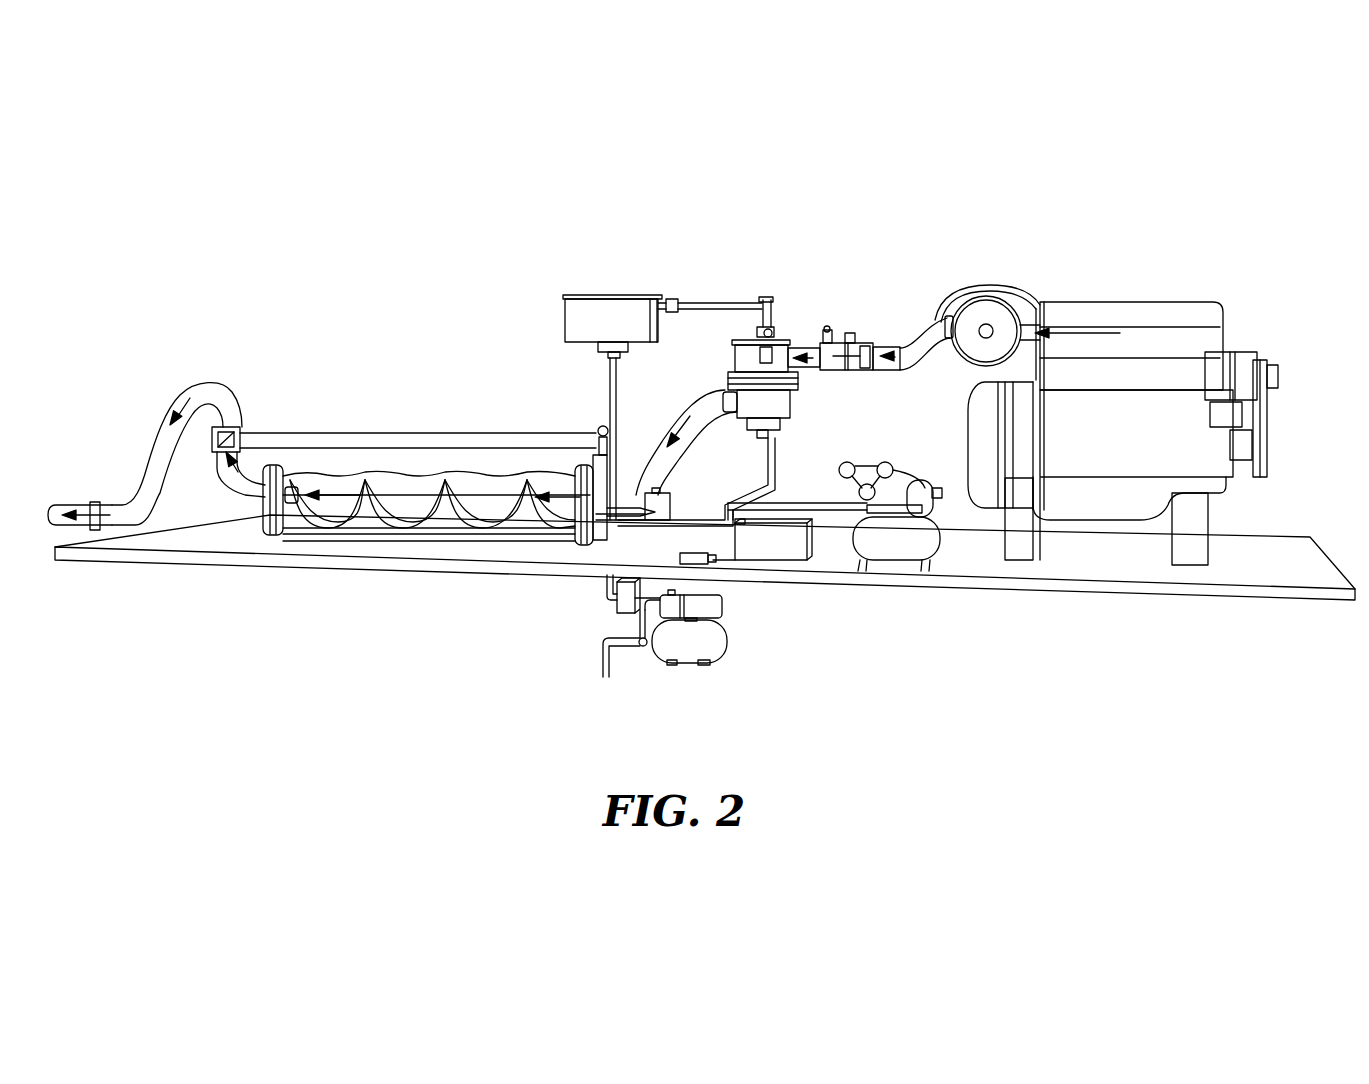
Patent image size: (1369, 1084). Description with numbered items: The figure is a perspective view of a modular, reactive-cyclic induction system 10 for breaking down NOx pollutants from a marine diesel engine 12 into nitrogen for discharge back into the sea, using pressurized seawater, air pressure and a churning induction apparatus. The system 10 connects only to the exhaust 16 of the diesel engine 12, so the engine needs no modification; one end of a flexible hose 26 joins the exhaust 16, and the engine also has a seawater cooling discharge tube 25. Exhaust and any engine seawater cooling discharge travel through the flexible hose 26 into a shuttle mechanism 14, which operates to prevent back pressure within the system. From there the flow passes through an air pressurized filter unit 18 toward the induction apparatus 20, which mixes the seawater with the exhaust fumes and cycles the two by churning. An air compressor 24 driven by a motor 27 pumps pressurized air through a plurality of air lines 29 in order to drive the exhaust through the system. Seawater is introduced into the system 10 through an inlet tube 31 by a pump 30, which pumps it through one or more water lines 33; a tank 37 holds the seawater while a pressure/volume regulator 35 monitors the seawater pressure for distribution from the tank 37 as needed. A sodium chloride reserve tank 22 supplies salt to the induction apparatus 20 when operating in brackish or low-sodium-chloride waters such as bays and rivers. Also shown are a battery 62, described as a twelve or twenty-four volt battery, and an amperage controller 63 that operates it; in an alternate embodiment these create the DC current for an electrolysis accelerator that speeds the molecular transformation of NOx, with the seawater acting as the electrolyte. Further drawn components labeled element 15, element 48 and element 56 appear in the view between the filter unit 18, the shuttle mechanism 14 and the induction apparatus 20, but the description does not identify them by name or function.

The modular reactive-cyclic induction system 10 is at (318, 292).
The marine exhaust diesel engine 12 is at (1184, 286).
The shuttle mechanism 14 is at (861, 325).
The sensor 15 is at (828, 330).
The exhaust 16 is at (1046, 300).
The air pressurized filter unit 18 is at (718, 342).
The induction apparatus 20 is at (436, 458).
The sodium chloride reserve tank 22 is at (577, 268).
The air compressor 24 is at (913, 604).
The engine seawater cooling discharge tube 25 is at (967, 288).
The flexible hose 26 is at (1028, 323).
The motor 27 is at (630, 542).
The air lines 29 is at (746, 485).
The pump 30 is at (725, 609).
The inlet tube 31 is at (603, 643).
The water lines 33 is at (604, 588).
The pressure/volume regulator 35 is at (617, 603).
The tank 37 is at (681, 665).
The hose 48 is at (672, 414).
The coupling 56 is at (633, 490).
The battery 62 is at (778, 520).
The amperage controller 63 is at (713, 563).